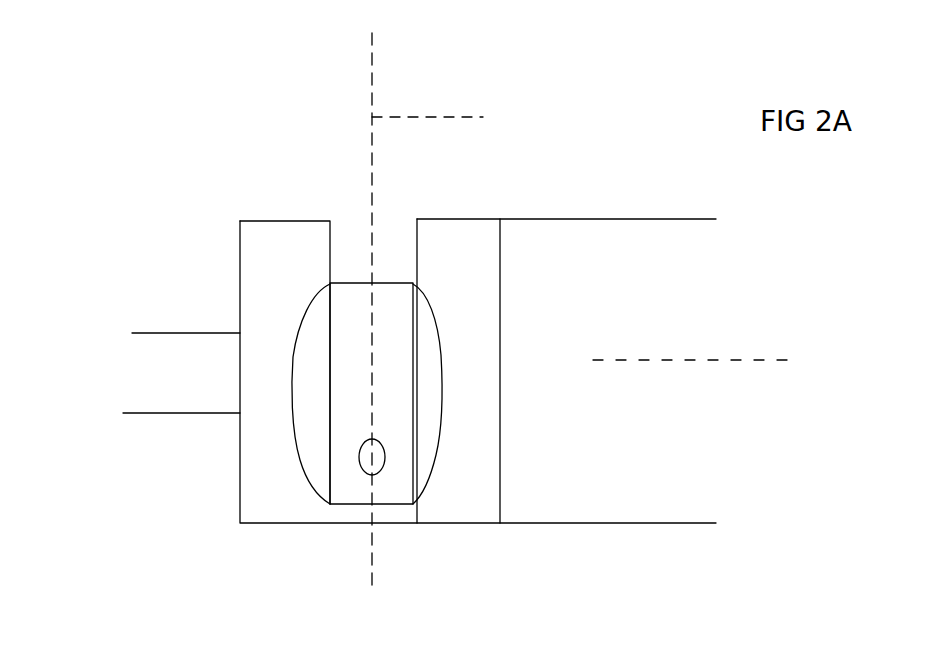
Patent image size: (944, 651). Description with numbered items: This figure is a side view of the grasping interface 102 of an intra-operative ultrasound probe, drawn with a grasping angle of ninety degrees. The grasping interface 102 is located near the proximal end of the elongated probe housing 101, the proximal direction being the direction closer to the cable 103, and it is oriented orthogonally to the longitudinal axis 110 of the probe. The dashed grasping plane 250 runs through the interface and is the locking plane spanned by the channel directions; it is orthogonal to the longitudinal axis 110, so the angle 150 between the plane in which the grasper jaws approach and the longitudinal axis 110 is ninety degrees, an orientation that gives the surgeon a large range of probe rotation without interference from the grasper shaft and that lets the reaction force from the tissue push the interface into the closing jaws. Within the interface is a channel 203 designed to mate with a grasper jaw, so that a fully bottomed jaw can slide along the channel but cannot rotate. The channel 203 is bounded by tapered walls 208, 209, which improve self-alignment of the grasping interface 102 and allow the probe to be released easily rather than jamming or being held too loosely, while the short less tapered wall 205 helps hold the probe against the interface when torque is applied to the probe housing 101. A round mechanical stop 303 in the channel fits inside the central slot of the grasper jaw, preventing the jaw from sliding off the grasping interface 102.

The grasping interface 102 is at (155, 128).
The probe housing 101 is at (610, 218).
The cable 103 is at (208, 333).
The channel 203 is at (392, 283).
The short less tapered wall 205 is at (332, 305).
The tapered wall 208 is at (300, 328).
The tapered wall 209 is at (438, 330).
The mechanical stop 303 is at (385, 460).
The grasping plane 250 is at (393, 325).
The angle 150 is at (381, 66).
The longitudinal axis 110 is at (719, 343).